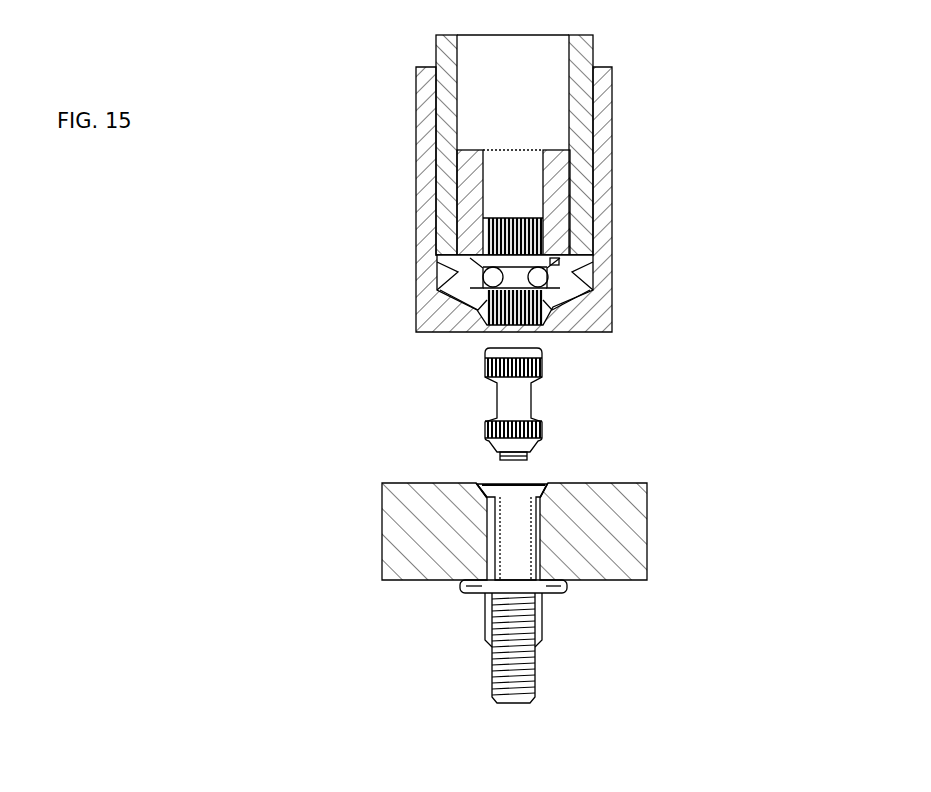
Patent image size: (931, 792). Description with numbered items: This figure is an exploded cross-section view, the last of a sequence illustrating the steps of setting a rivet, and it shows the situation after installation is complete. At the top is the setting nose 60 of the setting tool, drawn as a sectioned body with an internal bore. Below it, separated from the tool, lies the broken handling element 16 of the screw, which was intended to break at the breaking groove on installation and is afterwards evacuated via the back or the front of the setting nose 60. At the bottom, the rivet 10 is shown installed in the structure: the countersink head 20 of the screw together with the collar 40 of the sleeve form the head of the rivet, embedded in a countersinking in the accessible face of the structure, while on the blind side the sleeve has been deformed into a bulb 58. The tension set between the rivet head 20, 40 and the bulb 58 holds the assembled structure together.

The rivet 10 is at (575, 644).
The handling element 16 is at (574, 384).
The countersink head 20 is at (533, 483).
The collar 40 is at (477, 485).
The bulb 58 is at (514, 560).
The setting nose 60 is at (650, 114).